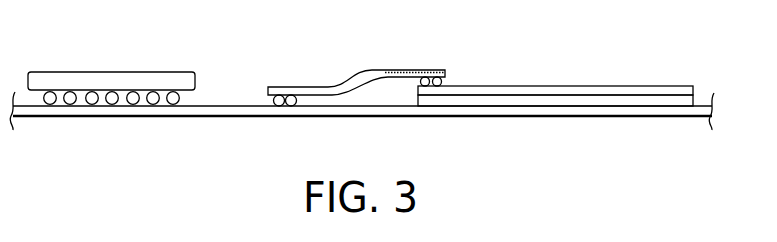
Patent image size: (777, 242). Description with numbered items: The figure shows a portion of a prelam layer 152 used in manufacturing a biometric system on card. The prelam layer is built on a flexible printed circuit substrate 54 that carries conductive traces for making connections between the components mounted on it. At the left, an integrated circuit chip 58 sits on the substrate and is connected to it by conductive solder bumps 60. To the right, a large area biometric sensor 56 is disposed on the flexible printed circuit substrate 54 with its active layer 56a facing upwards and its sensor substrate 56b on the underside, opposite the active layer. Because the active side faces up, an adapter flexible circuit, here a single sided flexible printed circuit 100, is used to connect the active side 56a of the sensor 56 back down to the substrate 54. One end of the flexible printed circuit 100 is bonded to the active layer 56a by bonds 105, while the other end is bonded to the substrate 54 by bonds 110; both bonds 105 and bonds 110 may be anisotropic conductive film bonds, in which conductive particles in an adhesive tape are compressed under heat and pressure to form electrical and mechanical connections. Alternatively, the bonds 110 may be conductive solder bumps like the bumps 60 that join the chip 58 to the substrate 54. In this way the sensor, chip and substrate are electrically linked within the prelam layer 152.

The flexible printed circuit substrate 54 is at (658, 115).
The large area biometric sensor 56 is at (573, 74).
The active layer 56a is at (595, 88).
The sensor substrate 56b is at (535, 102).
The integrated circuit chip 58 is at (77, 75).
The bumps 60 is at (133, 93).
The single sided flexible printed circuit 100 is at (400, 70).
The bonds 105 is at (443, 79).
The bonds 110 is at (273, 100).
The prelam layer 152 is at (277, 127).